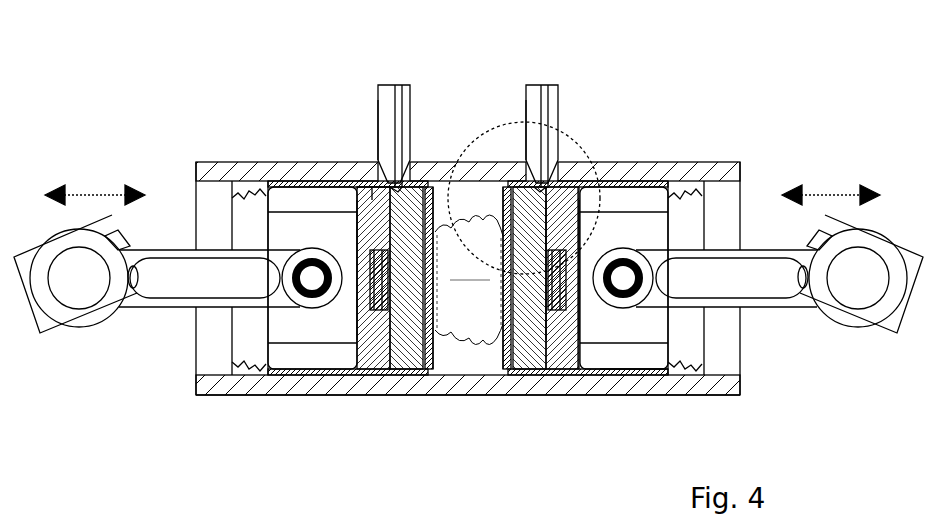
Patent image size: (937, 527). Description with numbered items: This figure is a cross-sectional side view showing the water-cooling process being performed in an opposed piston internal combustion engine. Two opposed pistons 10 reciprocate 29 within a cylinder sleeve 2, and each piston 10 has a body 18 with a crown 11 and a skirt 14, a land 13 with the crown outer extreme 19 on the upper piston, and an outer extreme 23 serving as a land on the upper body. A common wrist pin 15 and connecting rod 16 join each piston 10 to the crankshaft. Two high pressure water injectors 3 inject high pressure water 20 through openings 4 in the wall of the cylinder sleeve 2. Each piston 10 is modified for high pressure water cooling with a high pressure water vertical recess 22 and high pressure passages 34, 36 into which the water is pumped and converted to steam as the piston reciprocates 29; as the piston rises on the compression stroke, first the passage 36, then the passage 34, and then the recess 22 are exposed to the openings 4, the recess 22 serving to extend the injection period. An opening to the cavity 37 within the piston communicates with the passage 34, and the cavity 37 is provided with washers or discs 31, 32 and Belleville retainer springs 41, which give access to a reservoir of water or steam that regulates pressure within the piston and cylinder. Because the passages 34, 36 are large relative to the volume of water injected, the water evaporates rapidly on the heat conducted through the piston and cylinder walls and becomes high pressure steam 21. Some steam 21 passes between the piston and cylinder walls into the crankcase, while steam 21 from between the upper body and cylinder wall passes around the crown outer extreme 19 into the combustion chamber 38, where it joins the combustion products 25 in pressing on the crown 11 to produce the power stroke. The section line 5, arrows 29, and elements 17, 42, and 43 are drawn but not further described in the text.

The cylinder sleeve 2 is at (713, 385).
The high pressure water injector 3 is at (530, 103).
The opening 4 is at (385, 190).
The section line 5- 5 is at (473, 147).
The piston 10 is at (228, 226).
The crown 11 is at (435, 378).
The land 13 is at (533, 378).
The skirt 14 is at (300, 182).
The wrist pin 15 is at (290, 340).
The connecting rod 16 is at (165, 300).
The ring socket 17 is at (80, 322).
The body 18 is at (420, 260).
The crown outer extreme 19 is at (500, 205).
The high pressure water 20 is at (398, 85).
The steam 21 is at (250, 195).
The high pressure water vertical recess 22 is at (378, 185).
The outer extreme 23 is at (428, 370).
The combustion products 25 is at (465, 335).
The reciprocation 29 is at (462, 191).
The washer 31 is at (552, 378).
The disc 32 is at (375, 345).
The high pressure passage 34 is at (405, 345).
The high pressure passage 36 is at (430, 210).
The cavity 37 is at (585, 210).
The combustion chamber 38 is at (505, 378).
The Belleville retainer spring 41 is at (372, 205).
The top plate 42 is at (343, 200).
The bottom plate 43 is at (632, 375).